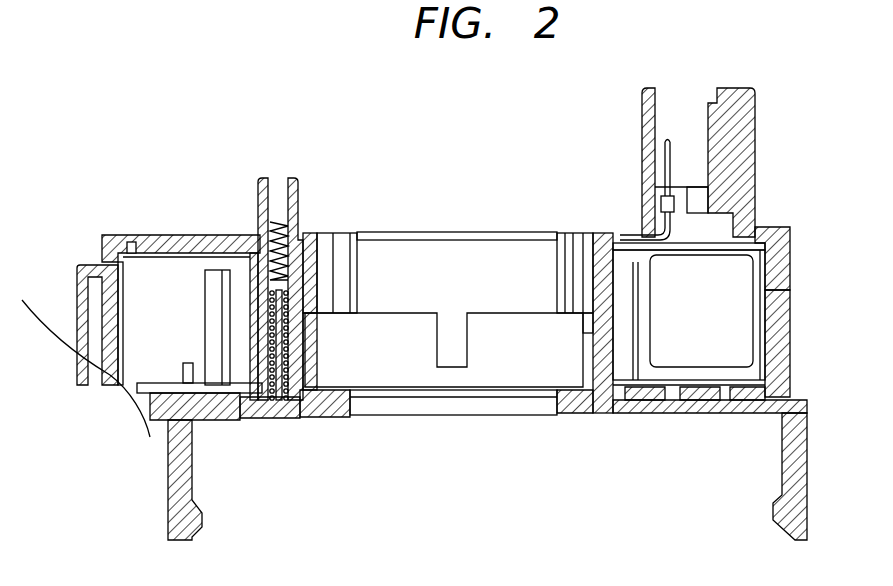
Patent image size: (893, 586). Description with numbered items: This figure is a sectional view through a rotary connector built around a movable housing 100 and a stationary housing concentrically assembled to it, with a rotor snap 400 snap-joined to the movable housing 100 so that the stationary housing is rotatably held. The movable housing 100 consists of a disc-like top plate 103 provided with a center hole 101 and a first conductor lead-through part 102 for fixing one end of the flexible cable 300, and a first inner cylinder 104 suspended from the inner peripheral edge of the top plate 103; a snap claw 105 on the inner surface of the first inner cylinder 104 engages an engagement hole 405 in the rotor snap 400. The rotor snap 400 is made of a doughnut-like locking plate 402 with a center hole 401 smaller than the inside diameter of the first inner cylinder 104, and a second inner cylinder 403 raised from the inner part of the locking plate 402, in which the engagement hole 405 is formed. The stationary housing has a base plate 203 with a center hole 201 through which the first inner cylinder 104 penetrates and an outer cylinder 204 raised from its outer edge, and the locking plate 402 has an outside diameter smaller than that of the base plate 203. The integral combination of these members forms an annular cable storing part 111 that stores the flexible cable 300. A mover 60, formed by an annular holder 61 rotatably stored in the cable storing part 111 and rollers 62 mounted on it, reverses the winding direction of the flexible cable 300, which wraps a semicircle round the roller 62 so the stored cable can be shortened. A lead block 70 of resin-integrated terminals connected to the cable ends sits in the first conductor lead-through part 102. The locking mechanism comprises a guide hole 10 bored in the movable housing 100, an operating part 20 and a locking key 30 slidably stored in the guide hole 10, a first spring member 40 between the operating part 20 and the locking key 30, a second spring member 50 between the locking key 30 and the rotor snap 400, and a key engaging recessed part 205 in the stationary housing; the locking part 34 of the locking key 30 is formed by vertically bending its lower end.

The guide hole 10 is at (462, 328).
The operating part 20 is at (258, 192).
The locking key 30 is at (282, 418).
The locking part 34 is at (225, 400).
The first spring member 40 is at (288, 224).
The second spring member 50 is at (275, 405).
The mover 60 is at (762, 397).
The annular holder 61 is at (700, 400).
The roller 62 is at (762, 268).
The lead block 70 is at (668, 140).
The movable housing 100 is at (721, 287).
The center hole 101 is at (495, 265).
The first conductor lead-through part 102 is at (758, 170).
The top plate 103 is at (612, 235).
The first inner cylinder 104 is at (590, 265).
The snap claw 105 is at (313, 312).
The cable storing part 111 is at (745, 287).
The center hole 201 is at (627, 400).
The base plate 203 is at (710, 397).
The outer cylinder 204 is at (793, 347).
The key engaging recessed part 205 is at (236, 385).
The flexible cable 300 is at (793, 300).
The rotor snap 400 is at (462, 450).
The center hole 401 is at (560, 410).
The locking plate 402 is at (592, 418).
The second inner cylinder 403 is at (572, 370).
The engagement hole 405 is at (318, 355).